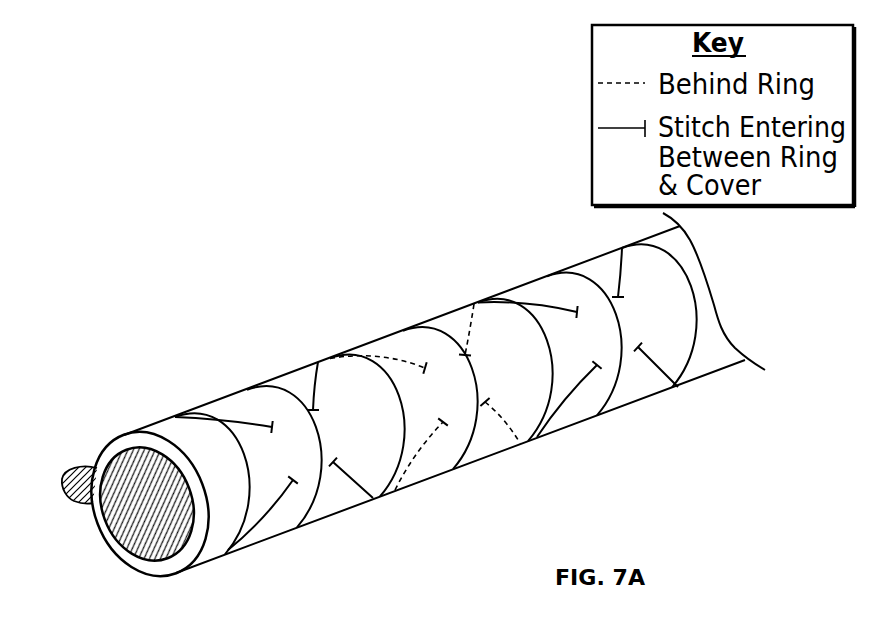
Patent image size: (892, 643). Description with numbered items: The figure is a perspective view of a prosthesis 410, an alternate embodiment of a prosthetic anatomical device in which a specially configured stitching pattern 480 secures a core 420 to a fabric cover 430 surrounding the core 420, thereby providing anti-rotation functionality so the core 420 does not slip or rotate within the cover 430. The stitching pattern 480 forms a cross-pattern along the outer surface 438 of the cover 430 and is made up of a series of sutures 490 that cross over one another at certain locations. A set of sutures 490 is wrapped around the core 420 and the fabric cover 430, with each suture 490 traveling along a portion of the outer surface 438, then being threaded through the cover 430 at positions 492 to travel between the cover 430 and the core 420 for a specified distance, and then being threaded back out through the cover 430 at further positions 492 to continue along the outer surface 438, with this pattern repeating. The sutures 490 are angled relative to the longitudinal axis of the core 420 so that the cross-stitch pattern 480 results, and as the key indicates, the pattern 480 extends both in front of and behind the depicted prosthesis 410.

The prosthesis 410 is at (112, 266).
The core 420 is at (128, 515).
The fabric cover 430 is at (103, 447).
The outer surface 438 is at (238, 405).
The stitching pattern 480 is at (390, 522).
The sutures 490 is at (528, 299).
The positions 492 is at (309, 410).